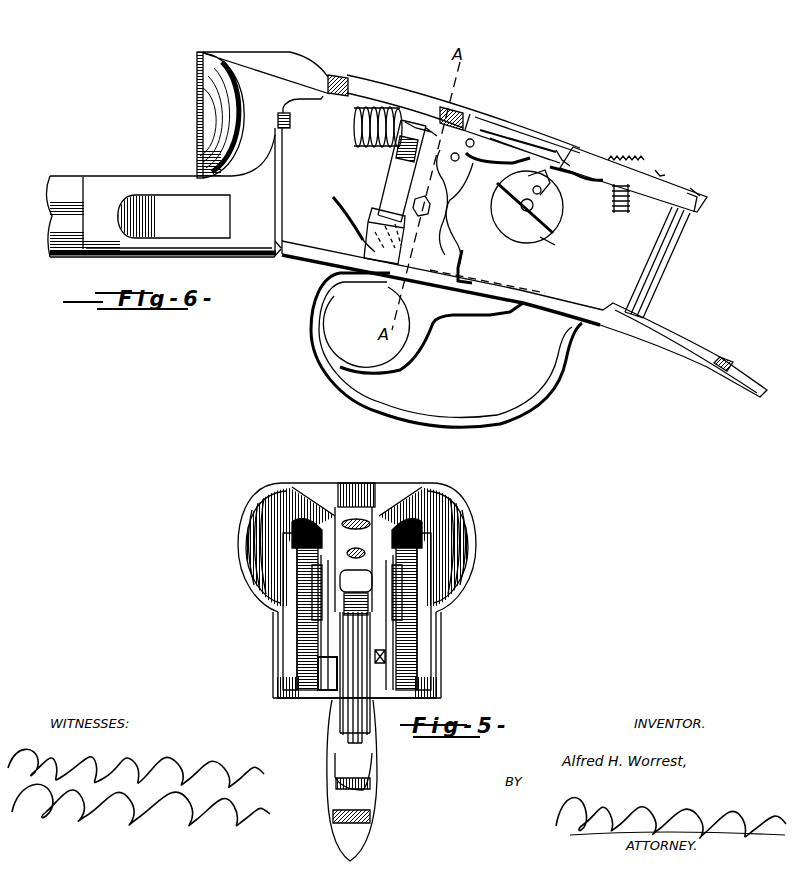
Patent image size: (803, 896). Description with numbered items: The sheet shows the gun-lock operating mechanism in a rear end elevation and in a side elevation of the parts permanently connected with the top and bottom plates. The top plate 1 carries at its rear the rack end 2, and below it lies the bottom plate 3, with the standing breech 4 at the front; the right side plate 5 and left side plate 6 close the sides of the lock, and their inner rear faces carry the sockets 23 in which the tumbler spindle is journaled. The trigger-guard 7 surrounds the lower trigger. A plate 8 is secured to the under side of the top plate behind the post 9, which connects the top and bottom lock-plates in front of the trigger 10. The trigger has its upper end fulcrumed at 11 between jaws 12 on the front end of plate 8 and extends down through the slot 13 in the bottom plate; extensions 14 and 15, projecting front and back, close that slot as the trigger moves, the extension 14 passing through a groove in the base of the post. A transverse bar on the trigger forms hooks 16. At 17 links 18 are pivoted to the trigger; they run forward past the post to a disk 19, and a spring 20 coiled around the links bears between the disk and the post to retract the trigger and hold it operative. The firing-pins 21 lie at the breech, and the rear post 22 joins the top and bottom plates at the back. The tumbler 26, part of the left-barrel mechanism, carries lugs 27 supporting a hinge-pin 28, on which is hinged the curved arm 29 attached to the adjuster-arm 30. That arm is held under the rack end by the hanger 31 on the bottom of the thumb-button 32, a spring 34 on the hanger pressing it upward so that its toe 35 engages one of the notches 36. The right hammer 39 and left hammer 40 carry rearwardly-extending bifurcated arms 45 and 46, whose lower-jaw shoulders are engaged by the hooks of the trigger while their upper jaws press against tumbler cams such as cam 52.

In FIG. 6, the top plate 1 is at (407, 95).
In FIG. 5, the top plate 1 is at (335, 490).
In FIG. 6, the rack end of the top plate 2 is at (678, 190).
In FIG. 5, the rack end of the top plate 2 is at (345, 640).
In FIG. 6, the bottom plate 3 is at (310, 255).
In FIG. 5, the bottom plate 3 is at (357, 770).
In FIG. 6, the standing breech 4 is at (197, 100).
In FIG. 5, the standing breech 4 is at (440, 510).
In FIG. 5, the right side plate 5 is at (440, 612).
In FIG. 5, the left side plate 6 is at (283, 622).
In FIG. 6, the trigger-guard 7 is at (545, 392).
In FIG. 5, the trigger-guard 7 is at (362, 832).
In FIG. 6, the plate 8 is at (508, 155).
In FIG. 6, the post 9 is at (390, 177).
In FIG. 6, the trigger 10 is at (465, 242).
In FIG. 6, the fulcrum 11 is at (479, 123).
In FIG. 6, the jaws 12 is at (427, 110).
In FIG. 6, the slot 13 is at (533, 288).
In FIG. 6, the extension 14 is at (348, 222).
In FIG. 6, the extension 15 is at (515, 303).
In FIG. 6, the hooks 16 is at (430, 208).
In FIG. 6, the pivot 17 is at (470, 166).
In FIG. 6, the links 18 is at (436, 148).
In FIG. 6, the disk 19 is at (354, 136).
In FIG. 6, the spring 20 is at (380, 82).
In FIG. 6, the firing-pins 21 is at (292, 120).
In FIG. 6, the rear post 22 is at (665, 270).
In FIG. 5, the rear post 22 is at (352, 710).
In FIG. 5, the sockets 23 is at (340, 632).
In FIG. 6, the tumbler 26 is at (560, 220).
In FIG. 6, the lugs 27 is at (542, 190).
In FIG. 6, the hinge-pin 28 is at (555, 200).
In FIG. 6, the arm 29 is at (562, 155).
In FIG. 6, the adjuster-arm 30 is at (610, 180).
In FIG. 6, the hanger 31 is at (620, 215).
In FIG. 6, the thumb-button 32 is at (633, 160).
In FIG. 5, the thumb-button 32 is at (420, 626).
In FIG. 6, the spring 34 is at (632, 208).
In FIG. 6, the toe 35 is at (695, 192).
In FIG. 6, the notches 36 is at (660, 172).
In FIG. 5, the right hammer 39 is at (415, 557).
In FIG. 5, the left hammer 40 is at (305, 550).
In FIG. 5, the bifurcated arm 45 is at (420, 585).
In FIG. 5, the bifurcated arm 46 is at (300, 565).
In FIG. 6, the cam 52 is at (553, 244).